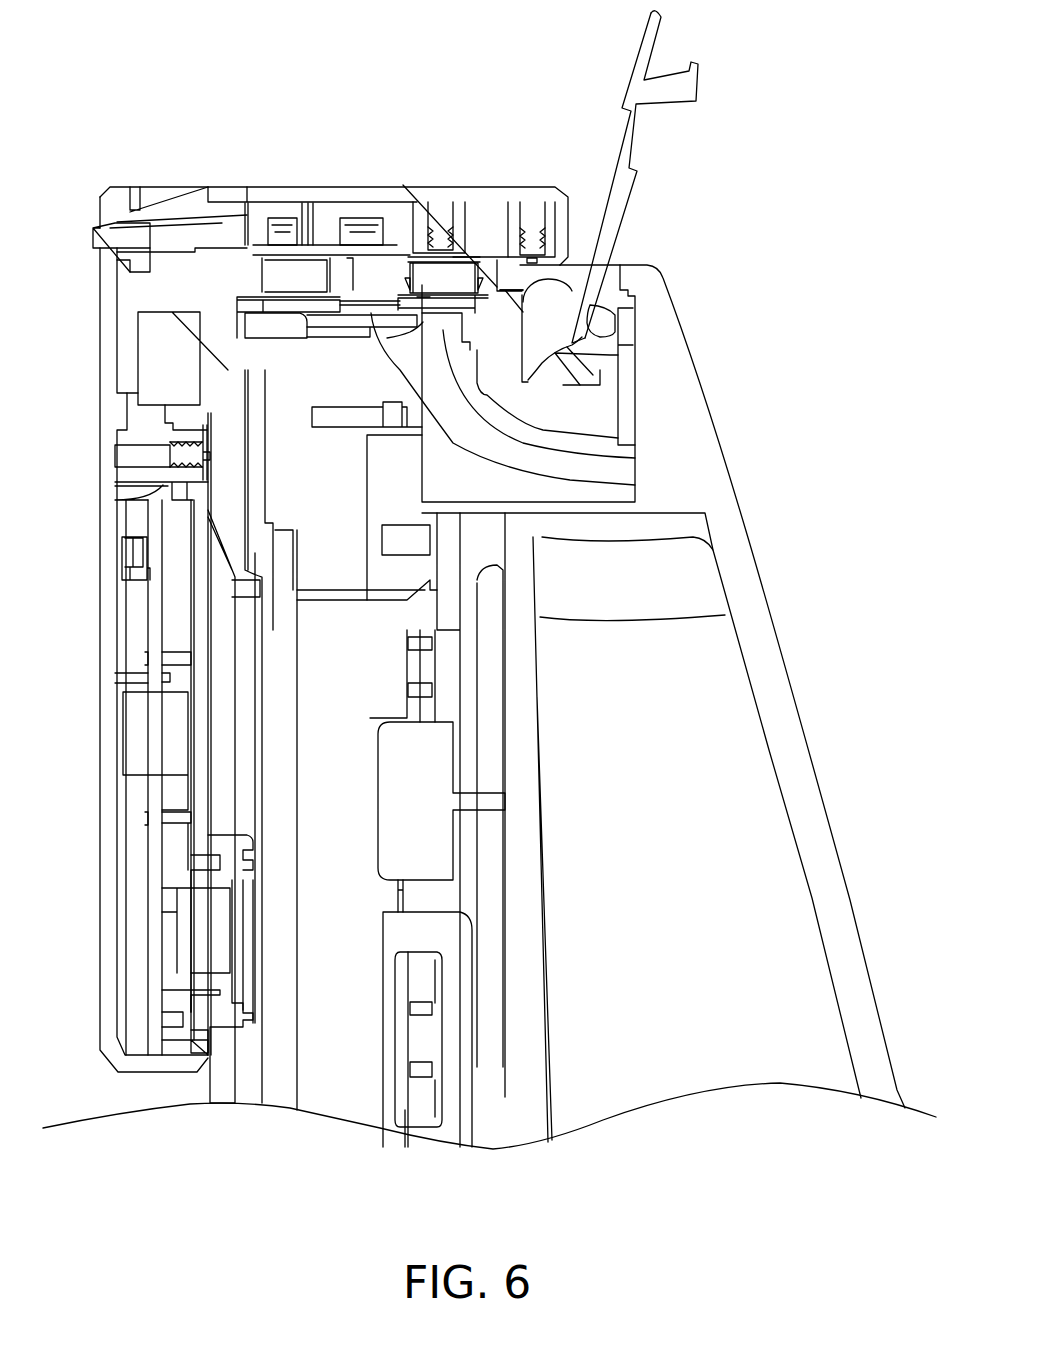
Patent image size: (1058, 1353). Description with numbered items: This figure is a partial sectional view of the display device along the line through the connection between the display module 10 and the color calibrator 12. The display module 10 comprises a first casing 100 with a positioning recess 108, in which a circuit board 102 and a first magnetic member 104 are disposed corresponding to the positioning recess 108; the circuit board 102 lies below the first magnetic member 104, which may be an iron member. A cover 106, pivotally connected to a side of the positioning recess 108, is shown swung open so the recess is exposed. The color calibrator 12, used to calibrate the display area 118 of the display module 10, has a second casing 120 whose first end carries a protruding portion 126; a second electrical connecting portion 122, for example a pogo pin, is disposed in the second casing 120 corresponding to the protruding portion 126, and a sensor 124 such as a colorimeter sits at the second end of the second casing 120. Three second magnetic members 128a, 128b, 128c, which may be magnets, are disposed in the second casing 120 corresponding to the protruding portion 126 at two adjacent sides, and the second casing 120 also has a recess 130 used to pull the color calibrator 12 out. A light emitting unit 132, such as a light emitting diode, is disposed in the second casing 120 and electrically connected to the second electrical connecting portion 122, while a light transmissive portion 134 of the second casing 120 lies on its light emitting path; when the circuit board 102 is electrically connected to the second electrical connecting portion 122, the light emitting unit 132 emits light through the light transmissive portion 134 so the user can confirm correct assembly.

The display module 10 is at (693, 342).
The color calibrator 12 is at (99, 407).
The first casing 100 is at (700, 385).
The circuit board 102 is at (640, 486).
The first magnetic member 104 is at (640, 458).
The cover 106 is at (660, 18).
The positioning recess 108 is at (237, 283).
The display area 118 is at (257, 733).
The second casing 120 is at (100, 515).
The second electrical connecting portion 122 is at (371, 313).
The sensor 124 is at (205, 930).
The protruding portion 126 is at (237, 285).
The second magnetic member 128a is at (450, 287).
The second magnetic member 128b is at (288, 287).
The second magnetic member 128c is at (143, 358).
The recess 130 is at (156, 190).
The light emitting unit 132 is at (250, 232).
The light transmissive portion 134 is at (92, 230).